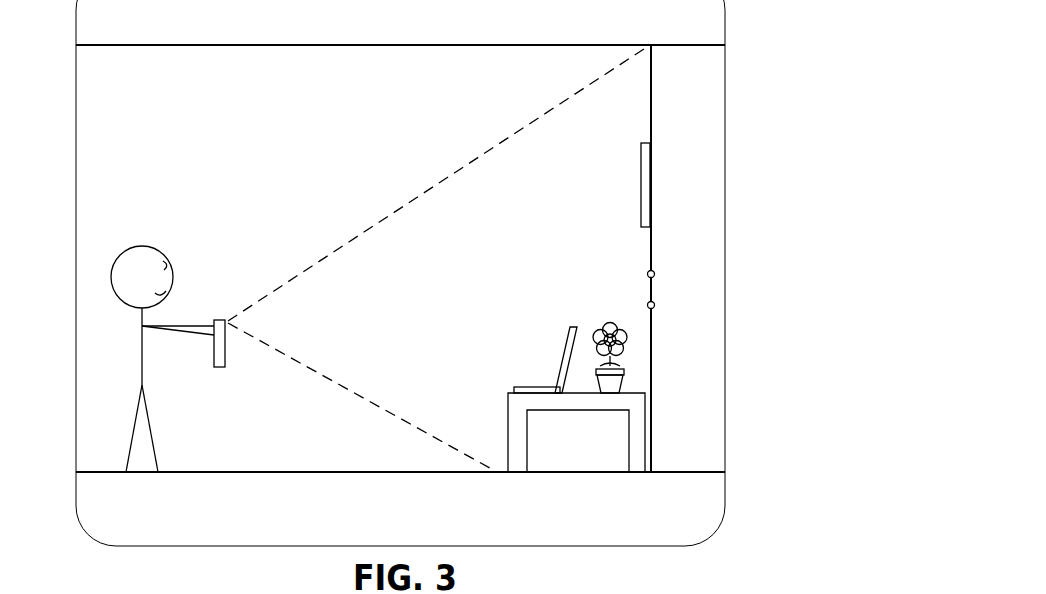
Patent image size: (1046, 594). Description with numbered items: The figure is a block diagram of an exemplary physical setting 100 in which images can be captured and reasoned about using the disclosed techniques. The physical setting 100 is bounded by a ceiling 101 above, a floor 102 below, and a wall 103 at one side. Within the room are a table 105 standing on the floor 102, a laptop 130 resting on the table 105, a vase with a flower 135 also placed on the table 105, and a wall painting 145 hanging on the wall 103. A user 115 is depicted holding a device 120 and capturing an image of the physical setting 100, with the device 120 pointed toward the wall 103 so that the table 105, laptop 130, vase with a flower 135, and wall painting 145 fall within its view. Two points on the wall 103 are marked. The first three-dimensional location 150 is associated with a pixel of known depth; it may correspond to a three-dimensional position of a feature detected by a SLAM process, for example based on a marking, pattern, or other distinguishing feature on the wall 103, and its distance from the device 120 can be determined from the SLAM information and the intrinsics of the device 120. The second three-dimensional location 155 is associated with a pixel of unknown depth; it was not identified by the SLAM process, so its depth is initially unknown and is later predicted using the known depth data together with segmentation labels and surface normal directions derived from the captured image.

The physical setting 100 is at (46, 52).
The ceiling 101 is at (164, 19).
The floor 102 is at (154, 518).
The wall 103 is at (704, 91).
The table 105 is at (508, 415).
The user 115 is at (143, 246).
The device 120 is at (218, 367).
The laptop 130 is at (563, 353).
The vase with a flower 135 is at (606, 325).
The wall painting 145 is at (641, 183).
The first 3D location 150 is at (655, 272).
The second 3D location 155 is at (655, 307).